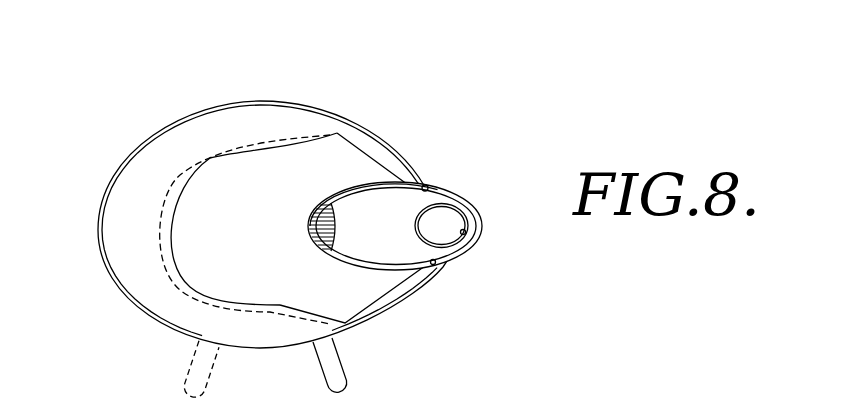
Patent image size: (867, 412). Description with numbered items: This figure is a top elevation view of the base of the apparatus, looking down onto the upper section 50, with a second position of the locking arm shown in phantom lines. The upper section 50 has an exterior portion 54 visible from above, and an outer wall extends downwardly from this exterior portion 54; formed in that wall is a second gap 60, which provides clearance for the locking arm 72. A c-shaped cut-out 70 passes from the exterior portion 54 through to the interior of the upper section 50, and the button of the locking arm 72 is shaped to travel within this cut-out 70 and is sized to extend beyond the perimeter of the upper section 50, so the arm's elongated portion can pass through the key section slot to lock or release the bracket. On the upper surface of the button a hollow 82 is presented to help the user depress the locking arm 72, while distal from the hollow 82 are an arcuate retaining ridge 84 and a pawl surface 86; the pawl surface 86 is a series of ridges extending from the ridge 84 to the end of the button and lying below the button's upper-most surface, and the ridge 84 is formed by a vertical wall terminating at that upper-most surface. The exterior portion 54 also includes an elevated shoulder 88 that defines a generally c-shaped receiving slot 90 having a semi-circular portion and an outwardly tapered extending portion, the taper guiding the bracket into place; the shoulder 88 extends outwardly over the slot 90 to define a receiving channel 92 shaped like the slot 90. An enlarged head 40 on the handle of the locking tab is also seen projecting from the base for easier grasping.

The enlarged head 40 is at (349, 371).
The upper section 50 is at (165, 315).
The exterior portion 54 is at (111, 261).
The second gap 60 is at (435, 264).
The c-shaped cut-out 70 is at (427, 186).
The locking arm 72 is at (469, 208).
The hollow 82 is at (465, 233).
The arcuate retaining ridge 84 is at (330, 208).
The pawl surface 86 is at (316, 226).
The elevated shoulder 88 is at (261, 143).
The receiving slot 90 is at (208, 159).
The receiving channel 92 is at (295, 140).